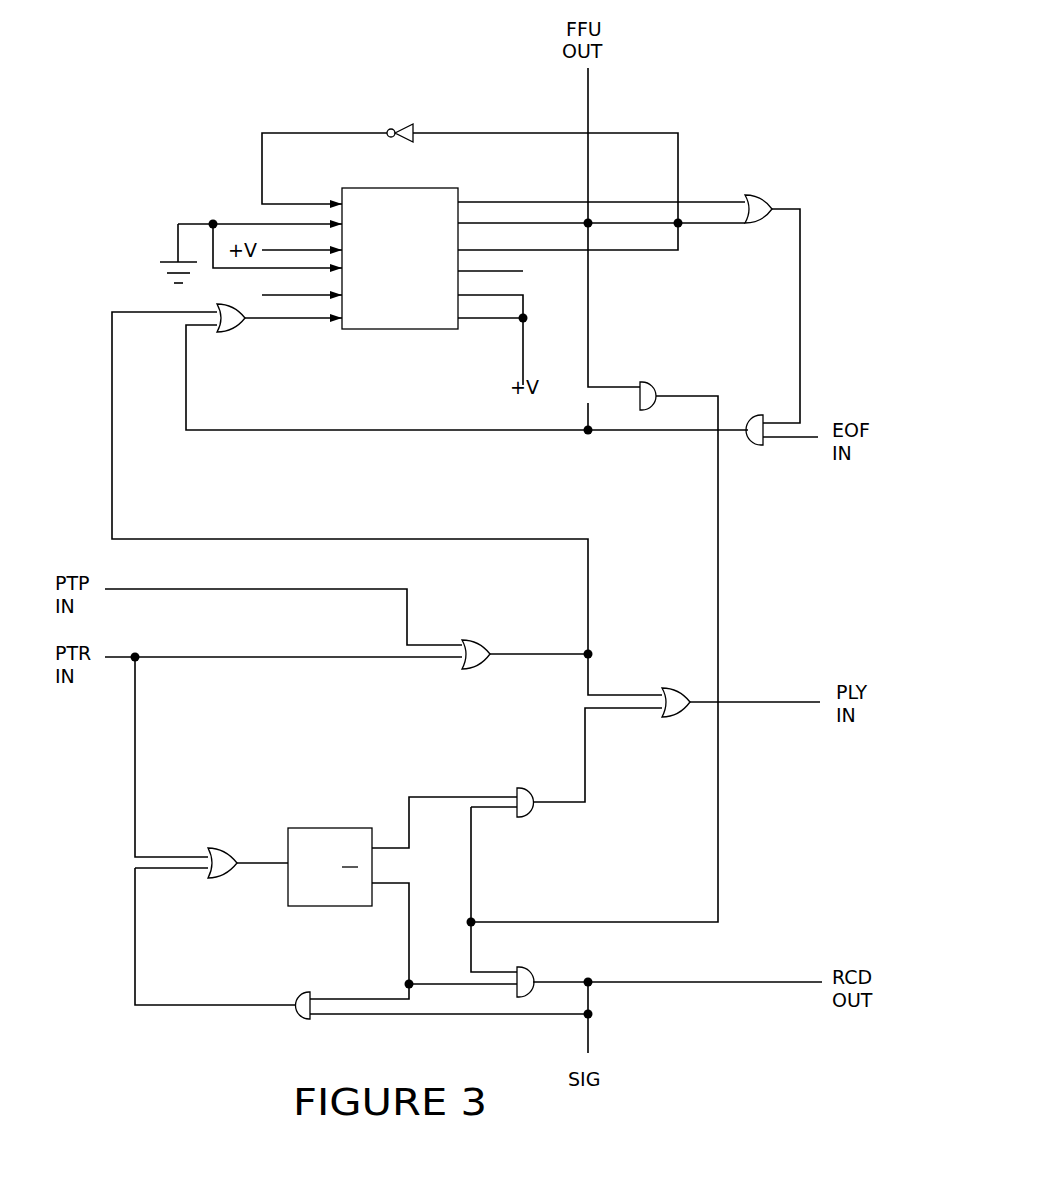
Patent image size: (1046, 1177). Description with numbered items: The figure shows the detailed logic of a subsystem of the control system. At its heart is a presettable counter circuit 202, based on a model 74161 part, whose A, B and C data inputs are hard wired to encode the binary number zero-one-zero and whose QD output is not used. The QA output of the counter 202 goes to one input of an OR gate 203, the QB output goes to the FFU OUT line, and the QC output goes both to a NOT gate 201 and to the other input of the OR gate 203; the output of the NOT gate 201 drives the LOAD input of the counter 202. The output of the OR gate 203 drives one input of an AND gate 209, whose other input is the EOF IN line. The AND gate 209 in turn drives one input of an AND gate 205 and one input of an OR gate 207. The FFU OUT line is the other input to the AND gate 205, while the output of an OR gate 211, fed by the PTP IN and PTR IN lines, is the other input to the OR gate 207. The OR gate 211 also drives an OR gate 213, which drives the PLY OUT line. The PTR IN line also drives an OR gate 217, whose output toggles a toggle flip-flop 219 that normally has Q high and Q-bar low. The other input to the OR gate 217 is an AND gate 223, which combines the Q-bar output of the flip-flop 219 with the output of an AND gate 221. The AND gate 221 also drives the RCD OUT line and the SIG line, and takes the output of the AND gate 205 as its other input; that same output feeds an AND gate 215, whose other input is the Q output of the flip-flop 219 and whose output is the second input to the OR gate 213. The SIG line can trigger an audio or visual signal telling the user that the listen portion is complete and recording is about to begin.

The NOT gate 201 is at (388, 114).
The presettable counter circuit 202 is at (400, 183).
The OR gate 203 is at (761, 193).
The AND gate 205 is at (656, 383).
The OR gate 207 is at (237, 330).
The AND gate 209 is at (760, 457).
The OR gate 211 is at (477, 634).
The OR gate 213 is at (675, 677).
The AND gate 215 is at (534, 823).
The OR gate 217 is at (223, 841).
The toggle flip-flop 219 is at (290, 923).
The AND gate 221 is at (536, 966).
The AND gate 223 is at (307, 982).